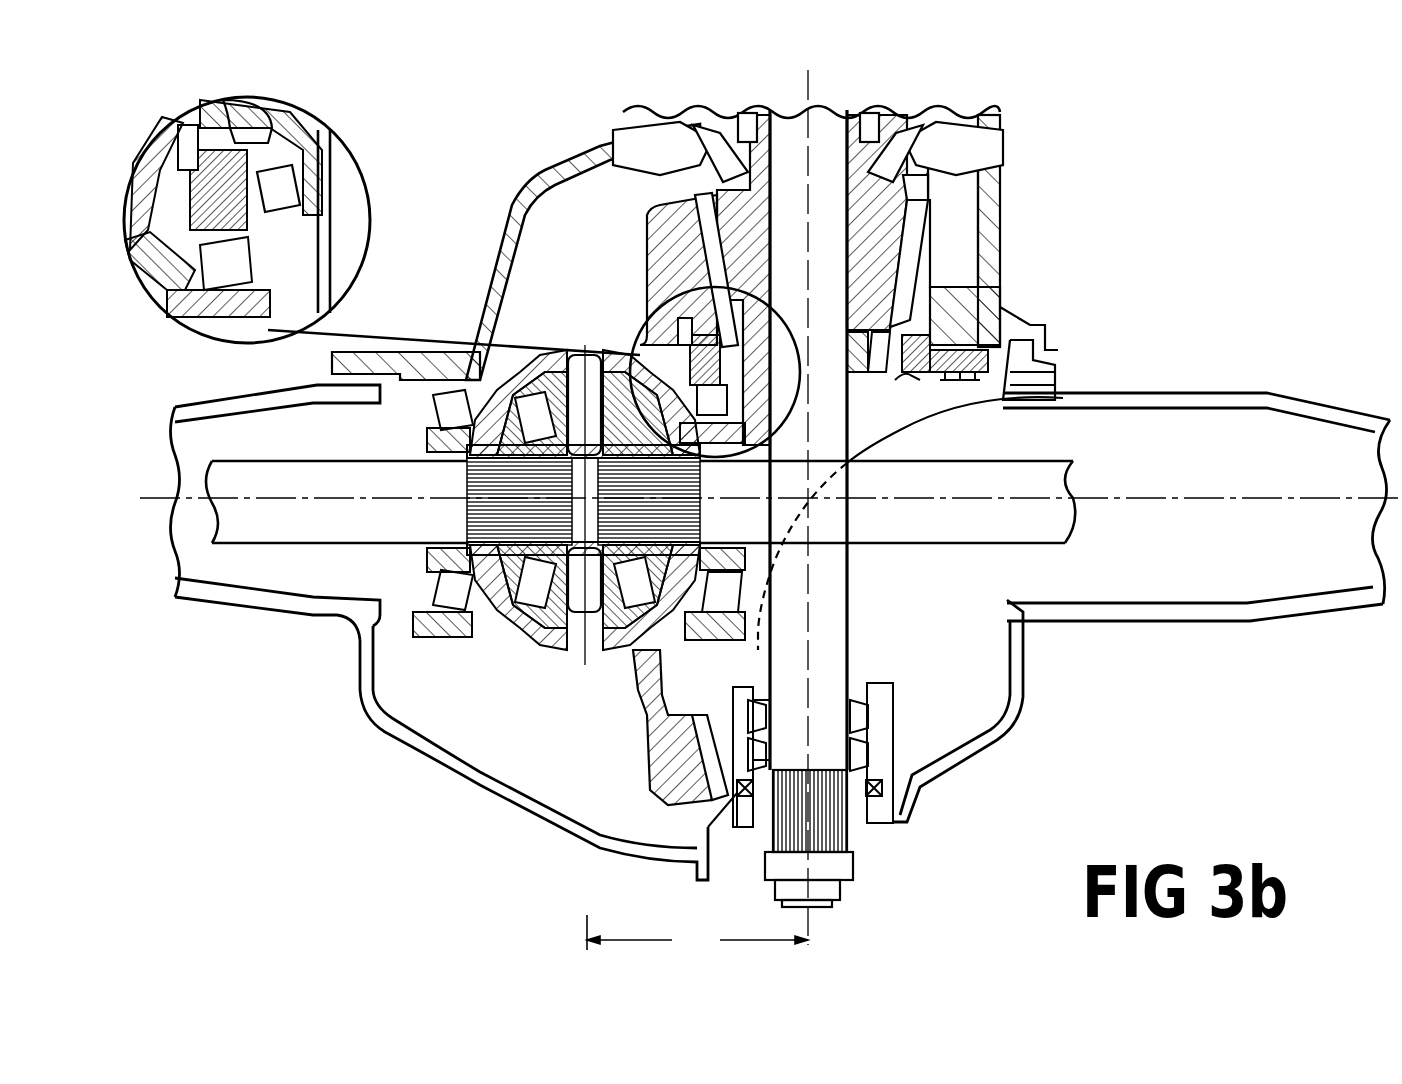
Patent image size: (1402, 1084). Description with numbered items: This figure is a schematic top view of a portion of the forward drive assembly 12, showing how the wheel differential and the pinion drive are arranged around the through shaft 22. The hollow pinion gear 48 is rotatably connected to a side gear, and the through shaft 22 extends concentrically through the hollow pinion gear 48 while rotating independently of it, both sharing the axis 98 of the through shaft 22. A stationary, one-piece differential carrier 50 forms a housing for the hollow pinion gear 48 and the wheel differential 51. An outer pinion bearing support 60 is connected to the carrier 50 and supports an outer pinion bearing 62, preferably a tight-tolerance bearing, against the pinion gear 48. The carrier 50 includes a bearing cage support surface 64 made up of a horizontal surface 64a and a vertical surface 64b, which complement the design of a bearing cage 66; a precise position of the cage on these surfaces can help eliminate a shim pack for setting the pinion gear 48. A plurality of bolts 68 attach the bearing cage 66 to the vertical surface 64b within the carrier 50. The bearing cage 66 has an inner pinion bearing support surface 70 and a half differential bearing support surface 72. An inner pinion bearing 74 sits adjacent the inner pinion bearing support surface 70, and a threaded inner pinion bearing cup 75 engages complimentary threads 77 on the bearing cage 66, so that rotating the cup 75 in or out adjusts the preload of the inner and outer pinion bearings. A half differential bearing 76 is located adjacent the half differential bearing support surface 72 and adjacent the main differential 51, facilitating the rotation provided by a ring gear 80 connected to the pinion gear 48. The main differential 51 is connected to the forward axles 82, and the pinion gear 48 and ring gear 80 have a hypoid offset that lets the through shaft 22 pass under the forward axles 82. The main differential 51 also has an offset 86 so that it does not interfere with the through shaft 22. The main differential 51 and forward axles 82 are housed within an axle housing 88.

The forward drive assembly 12 is at (470, 108).
The through shaft 22 is at (827, 580).
The hollow pinion gear 48 is at (923, 220).
The differential carrier 50 is at (502, 218).
The wheel differential 51 is at (566, 328).
The outer pinion bearing support 60 is at (645, 135).
The outer pinion bearing 62 is at (725, 155).
The bearing cage support surface 64 is at (1000, 322).
The horizontal surface 64a is at (1003, 330).
The vertical surface 64b is at (1000, 337).
The bearing cage 66 is at (1030, 335).
The bolts 68 is at (1067, 393).
The inner pinion bearing support surface 70 is at (248, 210).
The half differential bearing support surface 72 is at (250, 262).
The inner pinion bearing 74 is at (262, 112).
The threaded inner pinion bearing cup 75 is at (245, 140).
The half differential bearing 76 is at (250, 292).
The complimentary threads 77 is at (175, 225).
The ring gear 80 is at (645, 243).
The forward axles 82 is at (343, 470).
The offset 86 is at (697, 936).
The axle housing 88 is at (980, 742).
The axis 98 is at (815, 655).